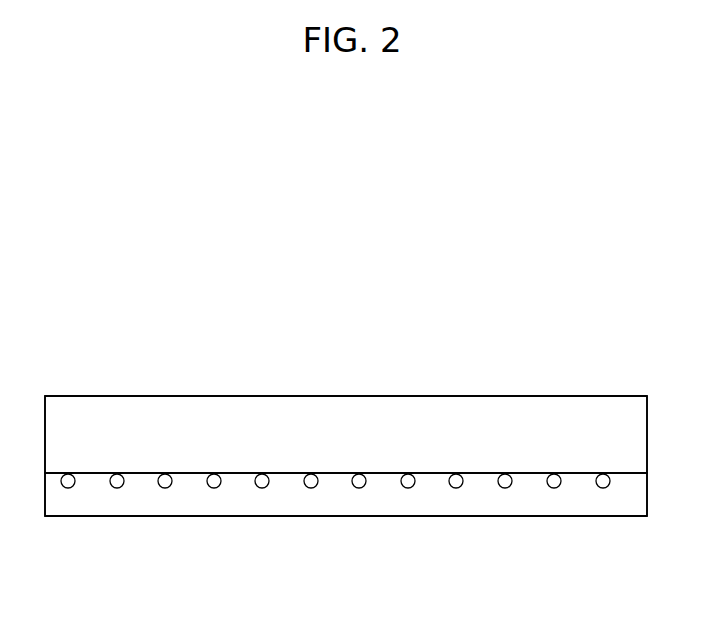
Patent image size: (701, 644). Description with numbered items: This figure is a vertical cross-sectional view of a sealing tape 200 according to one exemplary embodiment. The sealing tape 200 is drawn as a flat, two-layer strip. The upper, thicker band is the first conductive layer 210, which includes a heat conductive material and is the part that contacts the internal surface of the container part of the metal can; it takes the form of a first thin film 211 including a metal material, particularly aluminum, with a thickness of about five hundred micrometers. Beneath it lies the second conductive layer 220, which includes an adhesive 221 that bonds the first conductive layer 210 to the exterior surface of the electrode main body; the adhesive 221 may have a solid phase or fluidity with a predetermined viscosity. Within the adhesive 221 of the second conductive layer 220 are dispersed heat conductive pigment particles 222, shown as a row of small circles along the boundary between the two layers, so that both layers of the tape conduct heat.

The sealing tape 200 is at (128, 347).
The first conductive layer 210 is at (519, 388).
The first thin film 211 is at (448, 412).
The second conductive layer 220 is at (544, 568).
The adhesive 221 is at (524, 499).
The heat conductive pigment particles 222 is at (458, 483).